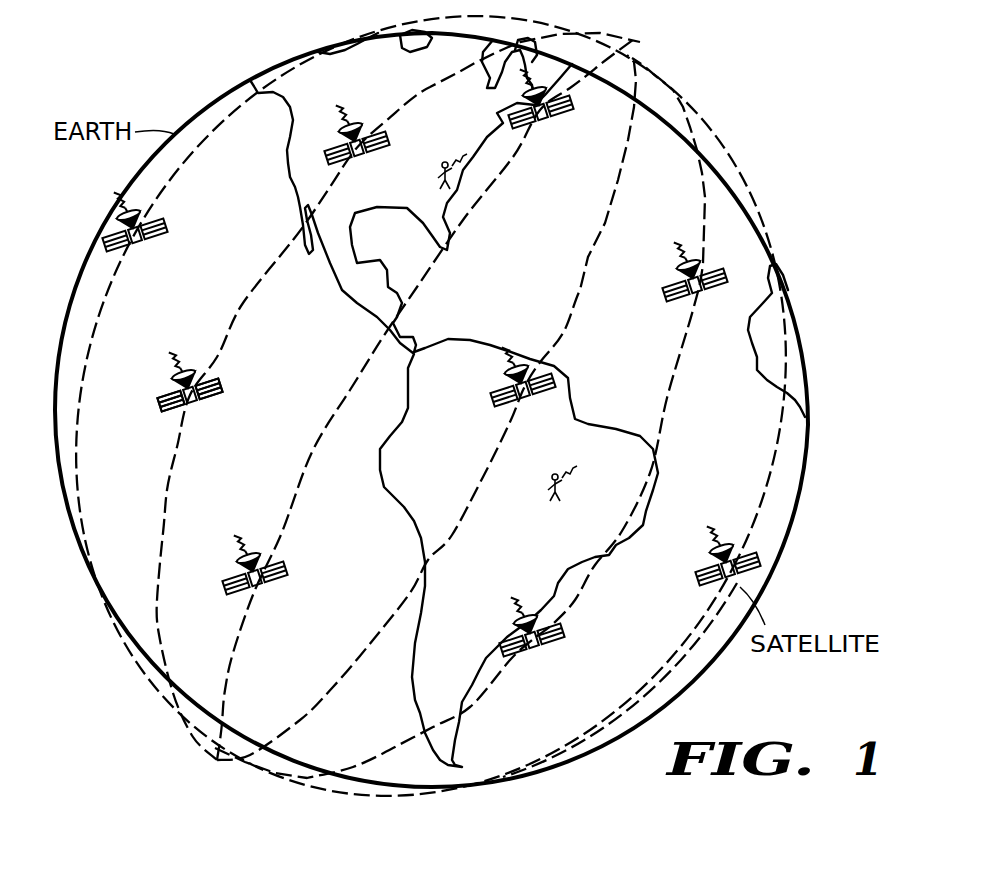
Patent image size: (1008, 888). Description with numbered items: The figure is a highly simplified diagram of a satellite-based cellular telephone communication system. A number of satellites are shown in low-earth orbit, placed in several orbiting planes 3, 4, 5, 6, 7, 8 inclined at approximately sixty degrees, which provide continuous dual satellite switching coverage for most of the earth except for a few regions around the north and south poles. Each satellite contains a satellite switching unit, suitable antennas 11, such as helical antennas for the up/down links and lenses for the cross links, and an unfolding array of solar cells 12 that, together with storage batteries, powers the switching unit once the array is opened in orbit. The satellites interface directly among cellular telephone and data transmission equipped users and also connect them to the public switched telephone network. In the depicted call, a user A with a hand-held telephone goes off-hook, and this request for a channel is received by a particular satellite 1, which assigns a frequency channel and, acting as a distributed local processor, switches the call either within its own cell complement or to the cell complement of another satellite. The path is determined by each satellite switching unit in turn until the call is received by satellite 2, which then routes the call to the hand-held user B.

The satellite 1 is at (562, 635).
The satellite 2 is at (360, 127).
The orbit plane 3 is at (85, 411).
The orbit plane 4 is at (162, 537).
The orbit plane 5 is at (232, 658).
The orbit plane 6 is at (318, 705).
The orbit plane 7 is at (407, 742).
The orbit plane 8 is at (612, 708).
The antennas 11 is at (195, 380).
The array of solar cells 12 is at (215, 393).
The user A is at (552, 470).
The user B is at (443, 161).